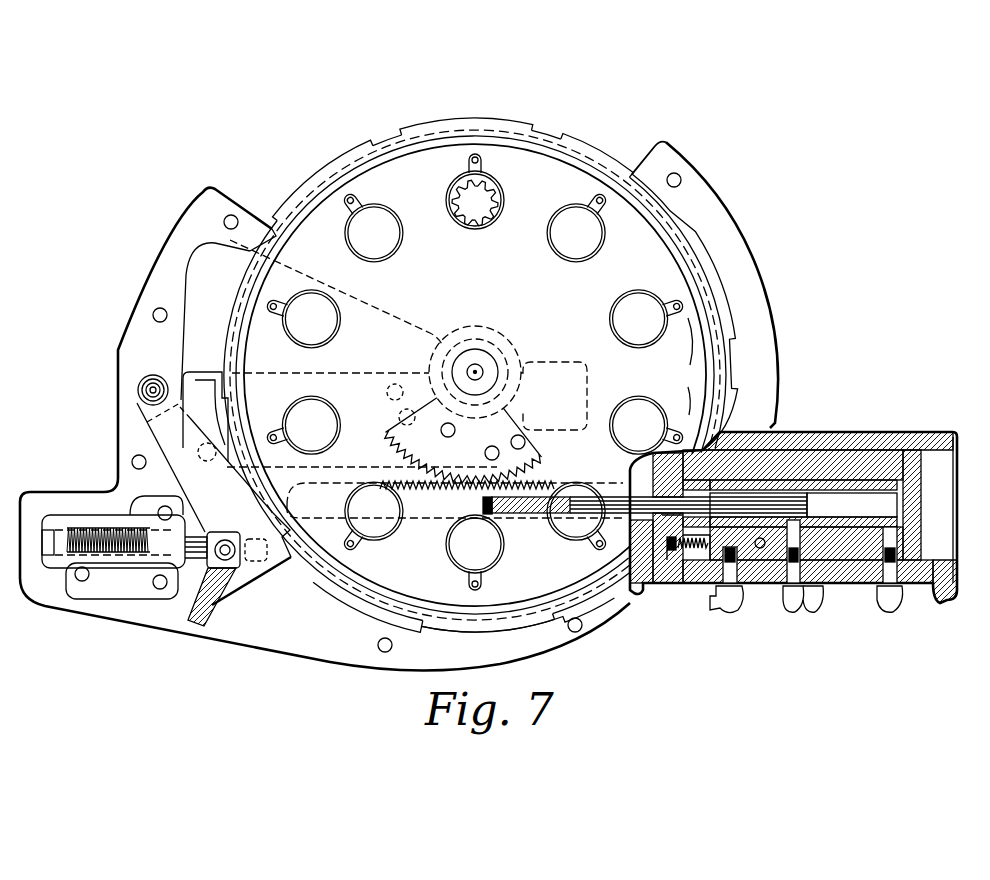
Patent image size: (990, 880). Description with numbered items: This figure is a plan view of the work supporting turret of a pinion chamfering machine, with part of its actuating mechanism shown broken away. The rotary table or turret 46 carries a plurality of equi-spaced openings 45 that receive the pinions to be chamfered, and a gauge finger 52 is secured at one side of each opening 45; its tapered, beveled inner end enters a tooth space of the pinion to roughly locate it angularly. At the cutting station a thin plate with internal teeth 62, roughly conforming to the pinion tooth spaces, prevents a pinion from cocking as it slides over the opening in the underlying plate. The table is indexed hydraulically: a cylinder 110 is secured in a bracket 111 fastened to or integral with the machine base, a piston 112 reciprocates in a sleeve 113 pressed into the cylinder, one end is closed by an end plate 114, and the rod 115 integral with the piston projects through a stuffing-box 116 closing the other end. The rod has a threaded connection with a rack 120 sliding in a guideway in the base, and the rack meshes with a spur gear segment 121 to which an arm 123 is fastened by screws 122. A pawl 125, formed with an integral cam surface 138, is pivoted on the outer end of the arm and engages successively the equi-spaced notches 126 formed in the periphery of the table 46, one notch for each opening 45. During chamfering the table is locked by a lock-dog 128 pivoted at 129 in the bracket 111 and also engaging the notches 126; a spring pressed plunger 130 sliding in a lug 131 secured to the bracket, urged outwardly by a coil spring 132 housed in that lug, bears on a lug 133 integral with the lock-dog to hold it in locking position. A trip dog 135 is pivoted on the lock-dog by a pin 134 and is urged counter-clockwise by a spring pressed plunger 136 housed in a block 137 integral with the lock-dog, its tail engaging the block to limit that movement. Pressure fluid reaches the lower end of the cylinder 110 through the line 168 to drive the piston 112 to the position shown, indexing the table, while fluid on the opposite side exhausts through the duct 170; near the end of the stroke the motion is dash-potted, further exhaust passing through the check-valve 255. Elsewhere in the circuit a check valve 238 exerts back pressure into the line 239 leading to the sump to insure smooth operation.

The openings 45 is at (630, 325).
The rotary table or turret 46 is at (548, 173).
The gauge finger 52 is at (684, 366).
The internal teeth 62 is at (498, 214).
The cylinder 110 is at (860, 553).
The bracket 111 is at (338, 655).
The piston 112 is at (777, 500).
The sleeve 113 is at (837, 480).
The end plate 114 is at (913, 502).
The rod 115 is at (676, 522).
The stuffing-box 116 is at (680, 553).
The rack 120 is at (552, 485).
The spur gear segment 121 is at (383, 437).
The screws 122 is at (388, 392).
The arm 123 is at (347, 373).
The pawl 125 is at (208, 378).
The notches 126 is at (547, 133).
The lock-dog 128 is at (277, 560).
The pivot 129 is at (143, 390).
The spring pressed plunger 130 is at (203, 567).
The lug 131 is at (123, 585).
The coil spring 132 is at (110, 530).
The lug 133 is at (227, 540).
The pin 134 is at (222, 539).
The trip dog 135 is at (256, 542).
The spring pressed plunger 136 is at (236, 578).
The block 137 is at (207, 604).
The cam surface 138 is at (222, 440).
The line 168 is at (903, 610).
The duct 170 is at (724, 612).
The check valve 238 is at (814, 610).
The line 239 is at (790, 610).
The check-valve 255 is at (703, 552).